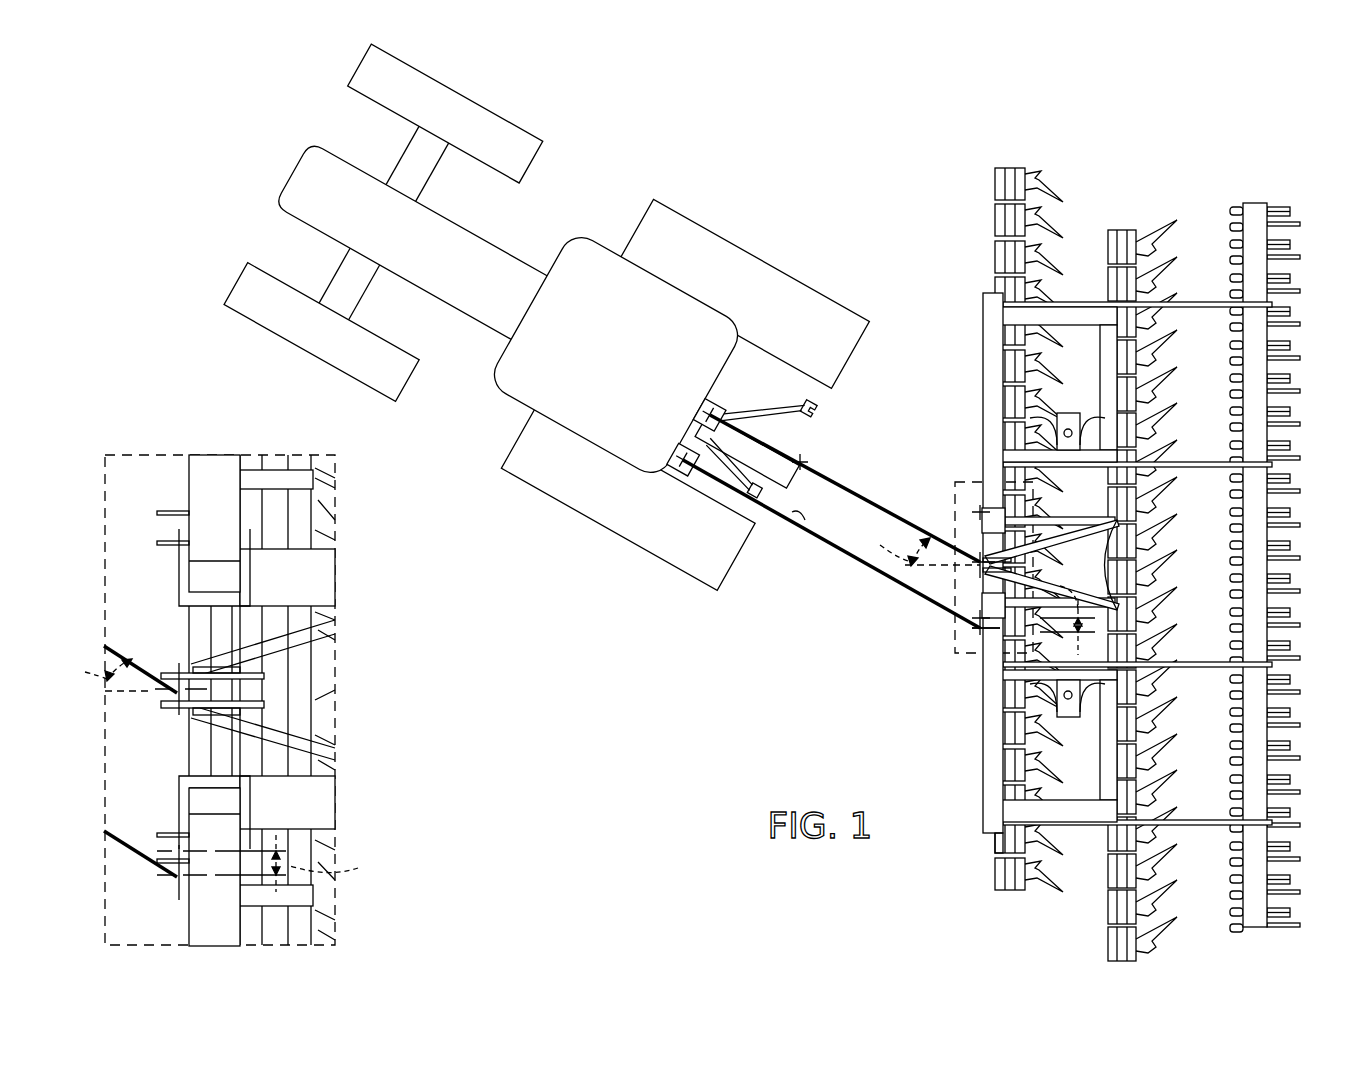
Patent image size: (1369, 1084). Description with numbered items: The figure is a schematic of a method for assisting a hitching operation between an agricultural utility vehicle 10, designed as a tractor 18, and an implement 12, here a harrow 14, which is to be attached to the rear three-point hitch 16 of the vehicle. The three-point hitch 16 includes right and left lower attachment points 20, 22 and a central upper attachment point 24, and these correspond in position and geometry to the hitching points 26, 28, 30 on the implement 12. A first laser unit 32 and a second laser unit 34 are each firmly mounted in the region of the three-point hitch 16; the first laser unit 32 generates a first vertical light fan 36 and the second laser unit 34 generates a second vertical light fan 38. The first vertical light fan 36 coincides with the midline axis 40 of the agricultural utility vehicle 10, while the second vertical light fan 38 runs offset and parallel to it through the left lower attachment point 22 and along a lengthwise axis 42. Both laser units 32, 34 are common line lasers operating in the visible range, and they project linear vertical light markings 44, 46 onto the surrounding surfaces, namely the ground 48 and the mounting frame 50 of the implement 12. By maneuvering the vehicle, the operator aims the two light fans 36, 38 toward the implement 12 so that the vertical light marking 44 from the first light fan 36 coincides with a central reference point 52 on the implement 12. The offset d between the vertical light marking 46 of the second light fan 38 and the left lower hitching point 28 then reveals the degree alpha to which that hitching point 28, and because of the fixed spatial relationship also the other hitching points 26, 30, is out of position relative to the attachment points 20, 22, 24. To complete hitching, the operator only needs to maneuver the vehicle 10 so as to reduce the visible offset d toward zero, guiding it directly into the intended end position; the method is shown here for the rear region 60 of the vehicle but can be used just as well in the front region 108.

The agricultural utility vehicle 10 is at (712, 88).
The implement 12 is at (1238, 107).
The harrow 14 is at (1262, 208).
The rear three-point hitch 16 is at (836, 410).
The tractor 18 is at (328, 170).
The right lower attachment point 20 is at (808, 408).
The left lower attachment point 22 is at (733, 468).
The central upper attachment point 24 is at (762, 413).
The hitching point 26 is at (980, 505).
The left lower hitching point 28 is at (978, 615).
The hitching point 30 is at (978, 556).
The first laser unit 32 is at (709, 415).
The second laser unit 34 is at (683, 459).
The first vertical light fan 36 is at (880, 502).
The second vertical light fan 38 is at (863, 572).
The midline axis 40 is at (747, 451).
The lengthwise axis 42 is at (800, 512).
The vertical light marking 44 is at (1040, 559).
The vertical light marking 46 is at (985, 640).
The ground 48 is at (421, 496).
The mounting frame 50 is at (983, 345).
The central reference point 52 is at (991, 590).
The rear region 60 is at (628, 495).
The front region 108 is at (255, 131).